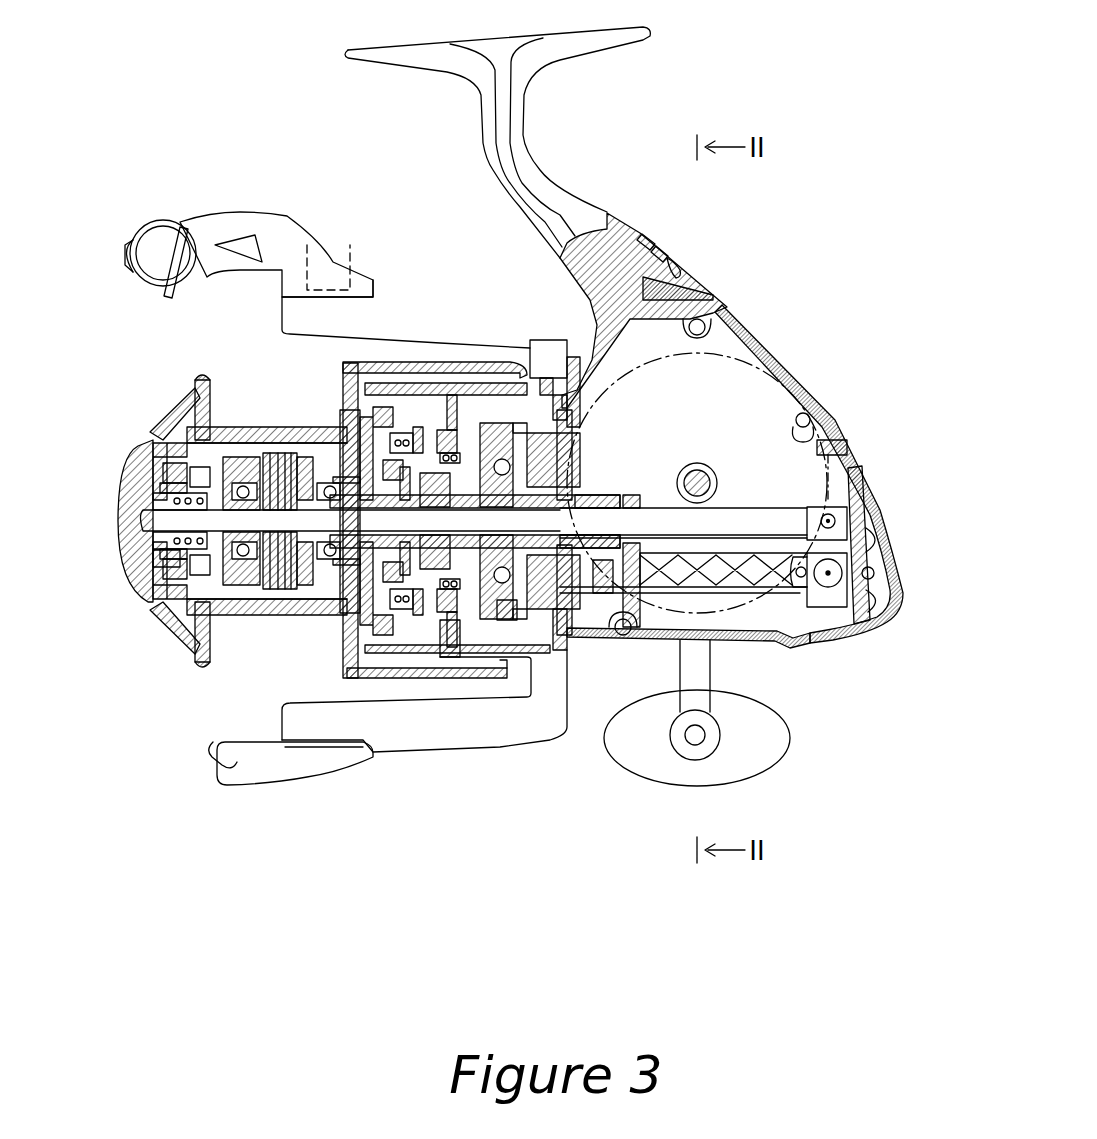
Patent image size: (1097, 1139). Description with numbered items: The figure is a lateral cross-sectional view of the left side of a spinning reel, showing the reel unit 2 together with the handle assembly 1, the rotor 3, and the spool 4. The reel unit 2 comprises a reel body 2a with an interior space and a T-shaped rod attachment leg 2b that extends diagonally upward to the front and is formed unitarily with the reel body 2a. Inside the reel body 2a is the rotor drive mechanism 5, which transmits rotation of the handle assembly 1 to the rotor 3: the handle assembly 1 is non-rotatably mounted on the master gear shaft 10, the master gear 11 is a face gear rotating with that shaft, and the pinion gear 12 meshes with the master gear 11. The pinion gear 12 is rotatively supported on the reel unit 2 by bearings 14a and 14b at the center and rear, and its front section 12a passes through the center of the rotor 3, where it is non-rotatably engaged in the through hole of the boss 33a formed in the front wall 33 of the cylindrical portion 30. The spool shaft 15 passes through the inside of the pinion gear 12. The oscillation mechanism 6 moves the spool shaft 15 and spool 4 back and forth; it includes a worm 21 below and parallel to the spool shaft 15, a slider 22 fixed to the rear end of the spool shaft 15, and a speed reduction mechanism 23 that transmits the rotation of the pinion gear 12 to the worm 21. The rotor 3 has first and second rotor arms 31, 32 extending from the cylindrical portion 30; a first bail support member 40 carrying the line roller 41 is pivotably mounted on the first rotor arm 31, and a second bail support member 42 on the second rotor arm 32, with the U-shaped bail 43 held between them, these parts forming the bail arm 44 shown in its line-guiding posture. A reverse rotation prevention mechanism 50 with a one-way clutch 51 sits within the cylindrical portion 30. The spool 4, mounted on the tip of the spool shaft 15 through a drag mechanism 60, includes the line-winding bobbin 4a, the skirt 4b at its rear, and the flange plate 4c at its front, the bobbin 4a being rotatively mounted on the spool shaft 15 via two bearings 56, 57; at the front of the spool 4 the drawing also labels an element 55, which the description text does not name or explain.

The handle assembly 1 is at (703, 687).
The reel unit 2 is at (676, 243).
The reel body 2a is at (722, 303).
The rod attachment leg 2b is at (513, 117).
The rotor 3 is at (555, 704).
The spool 4 is at (288, 607).
The line-winding bobbin 4a is at (250, 427).
The skirt 4b is at (360, 337).
The flange plate 4c is at (210, 403).
The rotor drive mechanism 5 is at (622, 472).
The oscillation mechanism 6 is at (733, 553).
The master gear shaft 10 is at (712, 468).
The master gear 11 is at (780, 348).
The pinion gear 12 is at (580, 600).
The front section of the pinion gear 12a is at (462, 595).
The bearing 14a is at (570, 495).
The bearing 14b is at (638, 485).
The spool shaft 15 is at (775, 590).
The worm 21 is at (797, 625).
The slider 22 is at (837, 627).
The speed reduction mechanism 23 is at (613, 637).
The cylindrical portion 30 is at (450, 610).
The first rotor arm 31 is at (393, 300).
The second rotor arm 32 is at (503, 737).
The front wall 33 is at (440, 370).
The boss 33a is at (462, 380).
The first bail support member 40 is at (278, 235).
The line roller 41 is at (150, 230).
The second bail support member 42 is at (273, 773).
The bail 43 is at (173, 288).
The bail arm 44 is at (168, 320).
The reverse rotation prevention mechanism 50 is at (512, 420).
The one-way clutch 51 is at (492, 420).
The drag knob 55 is at (170, 627).
The bearing 56 is at (213, 620).
The bearing 57 is at (330, 553).
The drag mechanism 60 is at (253, 580).